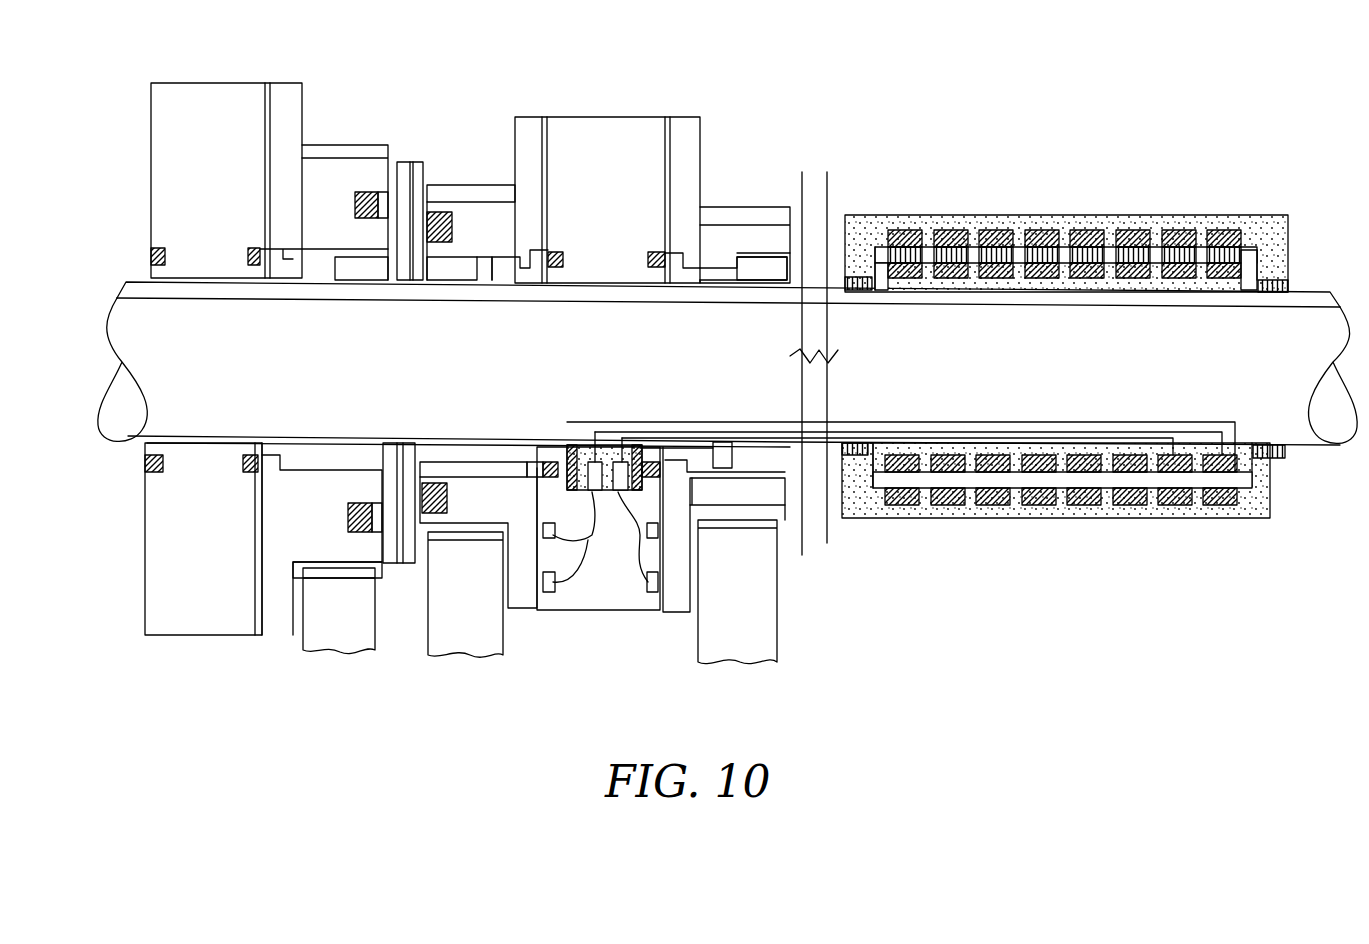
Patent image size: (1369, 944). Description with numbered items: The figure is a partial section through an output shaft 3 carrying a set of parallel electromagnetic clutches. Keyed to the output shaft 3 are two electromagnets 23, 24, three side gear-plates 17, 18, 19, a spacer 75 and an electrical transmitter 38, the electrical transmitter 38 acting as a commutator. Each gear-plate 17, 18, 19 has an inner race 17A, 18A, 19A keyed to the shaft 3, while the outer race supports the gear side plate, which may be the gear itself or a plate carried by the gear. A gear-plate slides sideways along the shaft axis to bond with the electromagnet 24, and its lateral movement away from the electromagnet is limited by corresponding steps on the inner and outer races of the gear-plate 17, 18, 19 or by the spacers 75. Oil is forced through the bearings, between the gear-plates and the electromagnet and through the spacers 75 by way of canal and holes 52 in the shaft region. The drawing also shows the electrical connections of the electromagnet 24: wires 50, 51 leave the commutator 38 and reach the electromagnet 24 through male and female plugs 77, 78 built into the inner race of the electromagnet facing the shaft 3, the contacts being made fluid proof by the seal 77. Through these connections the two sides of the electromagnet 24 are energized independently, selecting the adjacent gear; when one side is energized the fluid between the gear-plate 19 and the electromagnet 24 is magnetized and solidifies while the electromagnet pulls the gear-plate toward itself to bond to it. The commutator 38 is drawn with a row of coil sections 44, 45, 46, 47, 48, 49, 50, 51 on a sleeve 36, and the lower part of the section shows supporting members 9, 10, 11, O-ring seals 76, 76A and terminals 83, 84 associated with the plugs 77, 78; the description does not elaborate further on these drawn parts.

The output shaft 3 is at (727, 363).
The support member 9 is at (378, 631).
The support member 10 is at (506, 654).
The support member 11 is at (783, 629).
The gear-plate 17 is at (326, 140).
The inner race 17A is at (361, 268).
The gear-plate 18 is at (482, 182).
The inner race 18A is at (485, 367).
The gear-plate 19 is at (721, 205).
The inner race 19A is at (750, 362).
The electromagnet 23 is at (184, 80).
The electromagnet 24 is at (601, 113).
The sleeve 36 is at (1294, 284).
The electrical transmitter 38 is at (1268, 215).
The coil 44 is at (914, 507).
The coil 45 is at (957, 507).
The coil 46 is at (1005, 507).
The coil 47 is at (1050, 507).
The coil 48 is at (1093, 507).
The coil 49 is at (1142, 507).
The wire 50 is at (1187, 507).
The wire 51 is at (1233, 507).
The canal and holes 52 is at (568, 296).
The spacer 75 is at (409, 152).
The O-ring seal 76 is at (568, 251).
The O-ring seal 76A is at (458, 224).
The male plug / seal 77 is at (556, 488).
The female plug 78 is at (594, 496).
The terminal 83 is at (653, 598).
The terminal 84 is at (553, 598).